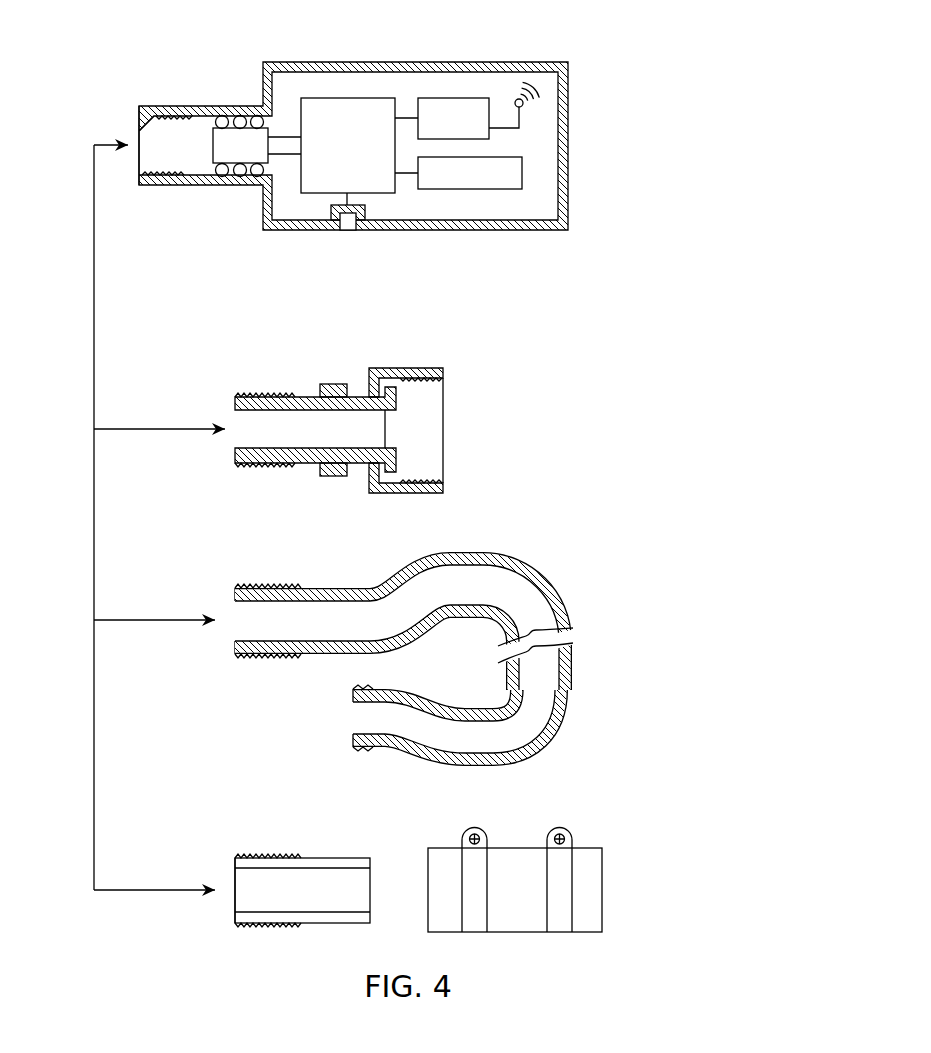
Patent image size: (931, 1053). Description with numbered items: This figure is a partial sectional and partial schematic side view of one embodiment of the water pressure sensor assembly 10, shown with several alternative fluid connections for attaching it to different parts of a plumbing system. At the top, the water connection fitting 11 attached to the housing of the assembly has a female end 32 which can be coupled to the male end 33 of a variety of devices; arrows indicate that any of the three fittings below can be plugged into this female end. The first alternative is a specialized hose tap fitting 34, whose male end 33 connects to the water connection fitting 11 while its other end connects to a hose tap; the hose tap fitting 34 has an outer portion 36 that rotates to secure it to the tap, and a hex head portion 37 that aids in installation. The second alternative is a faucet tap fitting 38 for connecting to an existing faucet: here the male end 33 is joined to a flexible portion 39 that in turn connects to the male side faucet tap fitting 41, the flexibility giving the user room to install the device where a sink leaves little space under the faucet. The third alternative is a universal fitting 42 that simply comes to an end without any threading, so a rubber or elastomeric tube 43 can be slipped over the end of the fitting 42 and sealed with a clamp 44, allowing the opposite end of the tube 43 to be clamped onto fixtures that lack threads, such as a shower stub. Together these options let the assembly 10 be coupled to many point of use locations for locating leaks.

The water pressure sensor assembly 10 is at (331, 115).
The water connection fitting 11 is at (134, 119).
The female end 32 is at (140, 130).
The male end 33 is at (252, 397).
The hose tap fitting 34 is at (386, 397).
The outer portion 36 is at (407, 368).
The hex head portion 37 is at (333, 384).
The faucet tap fitting 38 is at (420, 642).
The flexible portion 39 is at (485, 553).
The male side faucet tap fitting 41 is at (363, 748).
The universal fitting 42 is at (342, 838).
The tube 43 is at (524, 857).
The clamp 44 is at (479, 832).